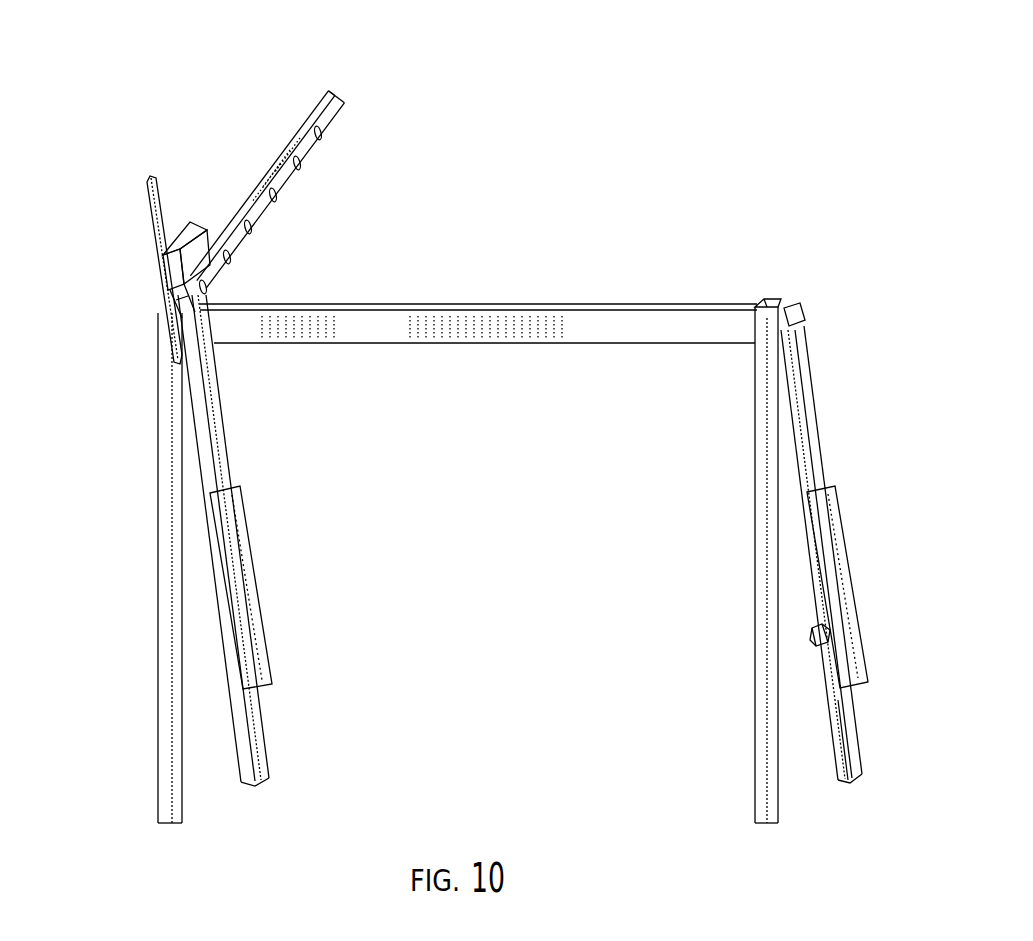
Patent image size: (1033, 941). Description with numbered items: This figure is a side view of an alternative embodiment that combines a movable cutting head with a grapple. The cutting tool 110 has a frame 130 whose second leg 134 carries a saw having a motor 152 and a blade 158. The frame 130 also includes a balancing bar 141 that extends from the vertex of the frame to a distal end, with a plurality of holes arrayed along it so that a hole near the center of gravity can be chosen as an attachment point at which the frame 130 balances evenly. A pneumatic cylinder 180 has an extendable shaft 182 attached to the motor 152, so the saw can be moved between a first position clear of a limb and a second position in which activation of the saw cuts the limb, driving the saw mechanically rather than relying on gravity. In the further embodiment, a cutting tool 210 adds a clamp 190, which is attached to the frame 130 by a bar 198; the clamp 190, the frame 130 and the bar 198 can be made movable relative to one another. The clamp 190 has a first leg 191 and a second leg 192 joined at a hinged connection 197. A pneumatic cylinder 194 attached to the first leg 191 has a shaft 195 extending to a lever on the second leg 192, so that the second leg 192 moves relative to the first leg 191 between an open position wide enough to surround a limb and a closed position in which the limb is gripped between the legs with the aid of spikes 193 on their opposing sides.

The cutting tool 110 is at (100, 135).
The frame 130 is at (128, 432).
The second leg 134 is at (160, 600).
The balancing bar 141 is at (290, 140).
The motor 152 is at (195, 222).
The blade 158 is at (152, 233).
The pneumatic cylinder 180 is at (252, 553).
The extendable shaft 182 is at (215, 425).
The clamp 190 is at (865, 435).
The first leg 191 is at (862, 752).
The second leg 192 is at (757, 470).
The spike 193 is at (778, 668).
The pneumatic cylinder 194 is at (845, 578).
The shaft 195 is at (808, 372).
The hinged connection 197 is at (770, 300).
The bar 198 is at (467, 308).
The cutting tool 210 is at (712, 130).